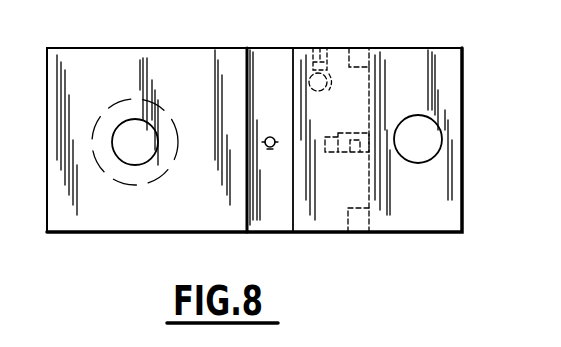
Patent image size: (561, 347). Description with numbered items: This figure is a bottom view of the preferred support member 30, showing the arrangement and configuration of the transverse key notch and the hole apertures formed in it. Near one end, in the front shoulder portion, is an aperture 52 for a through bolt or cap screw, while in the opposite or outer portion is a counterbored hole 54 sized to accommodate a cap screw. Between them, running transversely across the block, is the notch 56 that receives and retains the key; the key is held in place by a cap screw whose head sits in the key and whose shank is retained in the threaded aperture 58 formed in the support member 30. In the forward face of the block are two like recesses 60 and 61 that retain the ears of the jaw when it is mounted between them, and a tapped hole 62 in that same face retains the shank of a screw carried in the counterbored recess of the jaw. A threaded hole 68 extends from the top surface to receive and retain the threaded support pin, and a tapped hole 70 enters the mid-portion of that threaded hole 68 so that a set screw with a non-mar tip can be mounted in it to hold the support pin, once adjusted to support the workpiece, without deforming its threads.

The support member 30 is at (468, 49).
The aperture 52 is at (419, 152).
The counterbored hole 54 is at (137, 119).
The notch 56 is at (246, 73).
The threaded aperture 58 is at (270, 137).
The recess 60 is at (371, 47).
The recess 61 is at (360, 233).
The tapped hole 62 is at (343, 155).
The threaded hole 68 is at (331, 76).
The tapped hole 70 is at (323, 46).